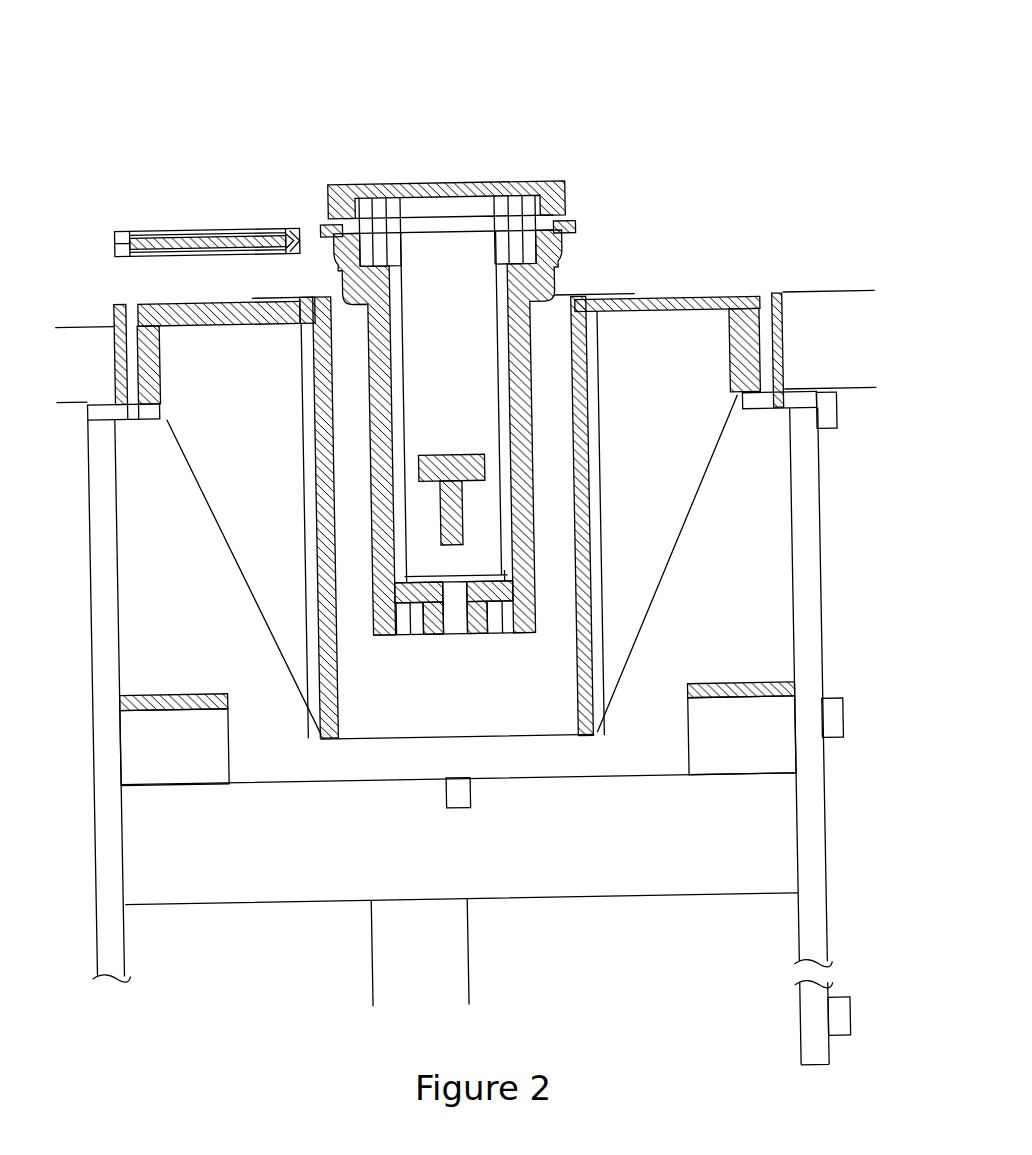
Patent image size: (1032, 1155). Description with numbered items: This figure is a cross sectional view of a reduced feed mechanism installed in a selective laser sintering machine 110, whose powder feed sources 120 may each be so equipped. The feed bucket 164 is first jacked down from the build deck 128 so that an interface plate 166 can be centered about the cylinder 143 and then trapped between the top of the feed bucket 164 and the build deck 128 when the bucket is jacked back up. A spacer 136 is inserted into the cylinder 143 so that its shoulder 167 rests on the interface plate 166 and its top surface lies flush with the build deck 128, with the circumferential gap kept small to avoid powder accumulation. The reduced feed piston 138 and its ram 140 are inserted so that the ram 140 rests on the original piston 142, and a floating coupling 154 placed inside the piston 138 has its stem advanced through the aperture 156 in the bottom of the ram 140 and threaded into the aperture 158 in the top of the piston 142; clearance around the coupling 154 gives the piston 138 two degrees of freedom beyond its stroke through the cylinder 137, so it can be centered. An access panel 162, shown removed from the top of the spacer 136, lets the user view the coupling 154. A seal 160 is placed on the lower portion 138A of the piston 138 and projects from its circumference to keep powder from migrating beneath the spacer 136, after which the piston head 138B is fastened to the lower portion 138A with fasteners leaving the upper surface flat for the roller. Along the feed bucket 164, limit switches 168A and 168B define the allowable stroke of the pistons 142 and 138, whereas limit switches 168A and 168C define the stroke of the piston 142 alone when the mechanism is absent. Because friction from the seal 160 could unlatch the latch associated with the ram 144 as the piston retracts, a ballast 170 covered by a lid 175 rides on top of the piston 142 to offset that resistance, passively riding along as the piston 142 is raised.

The selective laser sintering machine 110 is at (853, 186).
The sources 120 is at (358, 125).
The build deck 128 is at (821, 291).
The spacer 136 is at (696, 293).
The cylinder 137 is at (333, 408).
The reduced feed piston 138 is at (600, 124).
The lower portion of the piston 138A is at (574, 251).
The piston head 138B is at (517, 181).
The ram 140 is at (538, 493).
The piston 142 is at (262, 906).
The cylinder 143 is at (118, 566).
The ram 144 is at (447, 950).
The floating coupling 154 is at (452, 499).
The aperture 156 is at (458, 603).
The aperture 158 is at (458, 777).
The seal 160 is at (576, 229).
The access panel 162 is at (210, 229).
The feed bucket 164 is at (95, 740).
The interface plate 166 is at (150, 420).
The shoulder 167 is at (152, 403).
The limit switch 168A is at (850, 1017).
The limit switch 168B is at (843, 718).
The limit switch 168C is at (838, 408).
The ballast 170 is at (228, 758).
The lid 175 is at (142, 694).